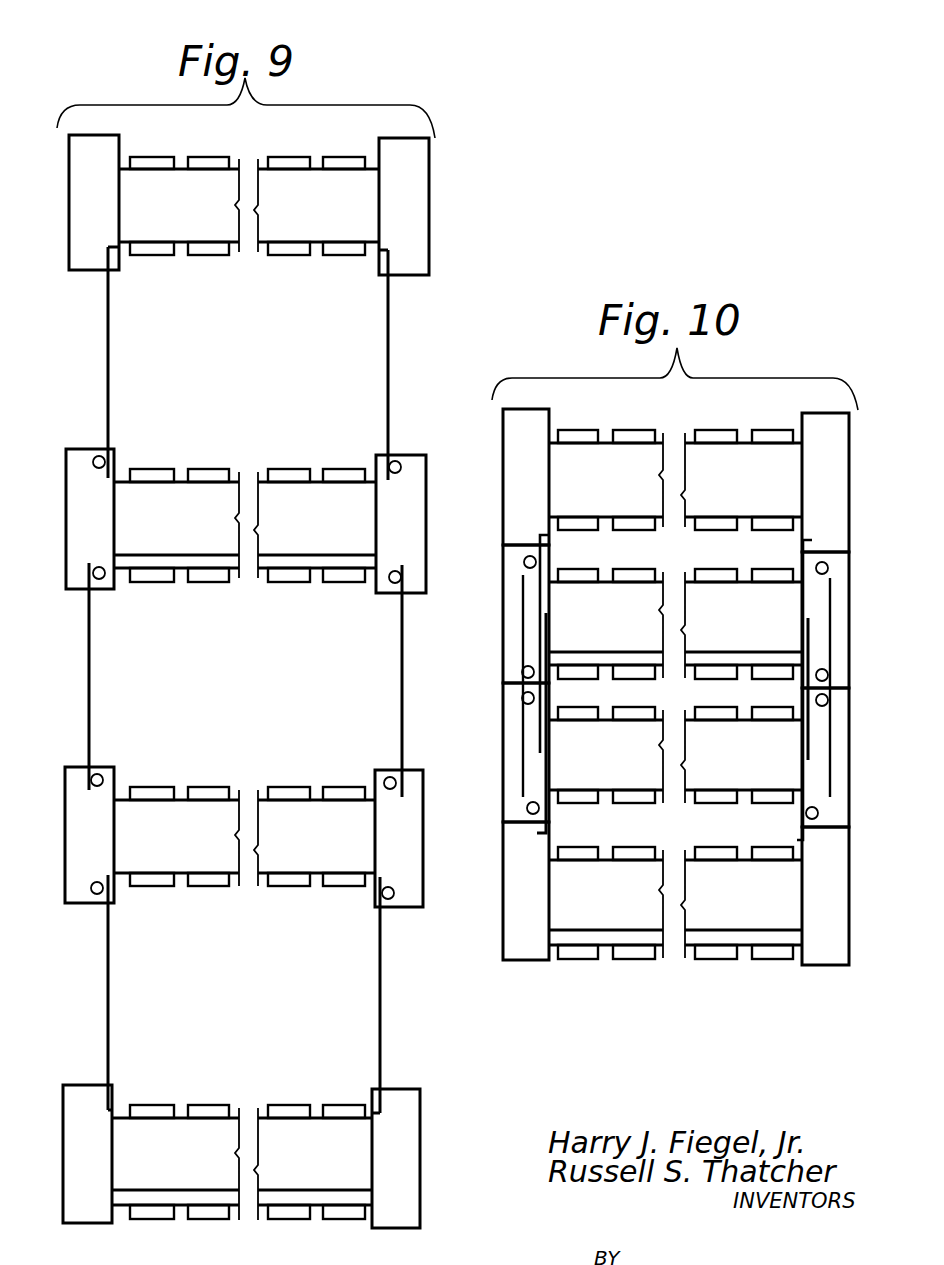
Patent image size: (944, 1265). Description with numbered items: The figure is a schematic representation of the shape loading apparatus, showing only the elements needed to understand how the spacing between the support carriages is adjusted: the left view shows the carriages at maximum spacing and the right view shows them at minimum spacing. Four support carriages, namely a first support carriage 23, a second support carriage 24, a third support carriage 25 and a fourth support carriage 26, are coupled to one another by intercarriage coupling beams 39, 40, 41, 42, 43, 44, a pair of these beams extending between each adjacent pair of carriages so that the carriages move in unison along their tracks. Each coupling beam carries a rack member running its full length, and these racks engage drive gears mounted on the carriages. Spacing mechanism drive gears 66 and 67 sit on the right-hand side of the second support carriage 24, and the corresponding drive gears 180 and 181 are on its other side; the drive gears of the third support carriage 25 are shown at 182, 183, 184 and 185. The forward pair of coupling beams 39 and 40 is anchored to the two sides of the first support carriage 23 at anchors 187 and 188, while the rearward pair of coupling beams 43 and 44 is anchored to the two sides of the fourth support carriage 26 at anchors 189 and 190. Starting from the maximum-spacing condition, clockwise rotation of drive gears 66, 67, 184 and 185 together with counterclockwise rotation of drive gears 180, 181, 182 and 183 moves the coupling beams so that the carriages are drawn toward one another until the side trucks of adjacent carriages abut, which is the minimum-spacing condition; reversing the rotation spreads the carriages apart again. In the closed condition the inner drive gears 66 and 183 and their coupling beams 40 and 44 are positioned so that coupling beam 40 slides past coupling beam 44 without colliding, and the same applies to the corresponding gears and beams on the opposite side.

In FIG. 9, the first support carriage 23 is at (69, 192).
In FIG. 10, the first support carriage 23 is at (503, 490).
In FIG. 9, the second support carriage 24 is at (66, 520).
In FIG. 10, the second support carriage 24 is at (503, 600).
In FIG. 9, the third support carriage 25 is at (65, 828).
In FIG. 10, the third support carriage 25 is at (503, 740).
In FIG. 9, the fourth support carriage 26 is at (63, 1158).
In FIG. 10, the fourth support carriage 26 is at (503, 858).
In FIG. 9, the forward coupling beam 39 is at (380, 355).
In FIG. 9, the forward coupling beam 40 is at (115, 346).
In FIG. 10, the forward coupling beam 40 is at (542, 596).
In FIG. 9, the intercarriage coupling beam 41 is at (402, 688).
In FIG. 9, the intercarriage coupling beam 42 is at (90, 690).
In FIG. 10, the intercarriage coupling beam 42 is at (520, 632).
In FIG. 9, the rearward coupling beam 43 is at (380, 1020).
In FIG. 9, the rearward coupling beam 44 is at (108, 1020).
In FIG. 10, the rearward coupling beam 44 is at (548, 778).
In FIG. 9, the spacing mechanism drive gear 66 is at (93, 463).
In FIG. 10, the spacing mechanism drive gear 66 is at (524, 562).
In FIG. 9, the spacing mechanism drive gear 67 is at (99, 584).
In FIG. 9, the drive gear 180 is at (397, 457).
In FIG. 9, the drive gear 181 is at (393, 588).
In FIG. 9, the drive gear 182 is at (98, 773).
In FIG. 9, the drive gear 183 is at (96, 896).
In FIG. 10, the drive gear 183 is at (527, 808).
In FIG. 9, the drive gear 184 is at (389, 776).
In FIG. 9, the drive gear 185 is at (390, 900).
In FIG. 9, the anchor 187 is at (388, 250).
In FIG. 9, the anchor 188 is at (106, 250).
In FIG. 9, the anchor 189 is at (382, 1115).
In FIG. 9, the anchor 190 is at (108, 1112).